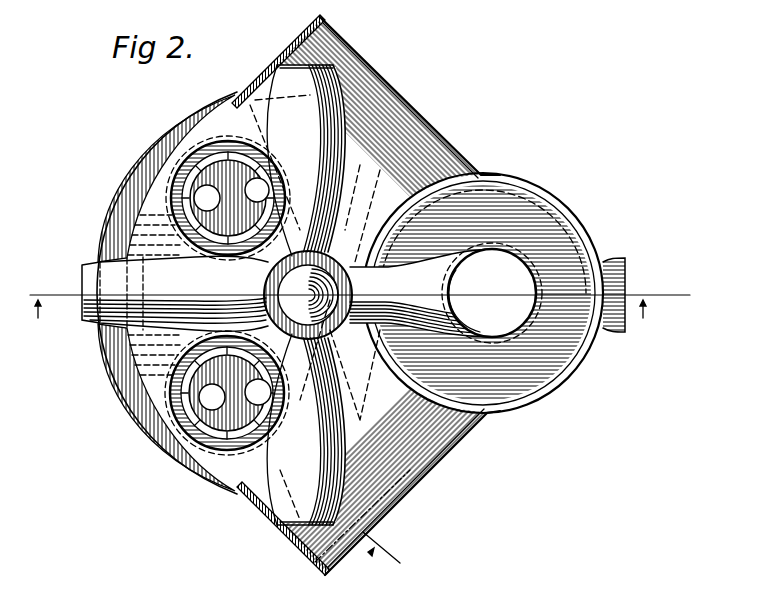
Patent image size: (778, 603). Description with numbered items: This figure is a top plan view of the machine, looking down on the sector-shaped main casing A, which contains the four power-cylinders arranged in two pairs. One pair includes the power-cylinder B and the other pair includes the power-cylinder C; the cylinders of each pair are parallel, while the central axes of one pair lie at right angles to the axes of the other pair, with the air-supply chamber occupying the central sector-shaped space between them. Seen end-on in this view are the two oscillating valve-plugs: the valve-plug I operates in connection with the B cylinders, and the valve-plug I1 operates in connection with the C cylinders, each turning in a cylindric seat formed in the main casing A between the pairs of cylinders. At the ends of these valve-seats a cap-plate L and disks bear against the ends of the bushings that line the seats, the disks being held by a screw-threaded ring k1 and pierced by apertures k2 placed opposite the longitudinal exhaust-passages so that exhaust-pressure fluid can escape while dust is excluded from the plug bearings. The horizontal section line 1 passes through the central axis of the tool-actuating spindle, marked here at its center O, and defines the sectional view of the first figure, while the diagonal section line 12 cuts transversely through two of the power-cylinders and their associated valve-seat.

The main casing A is at (193, 455).
The power-cylinder B is at (400, 123).
The power-cylinder C is at (398, 472).
The oscillating valve-plug I is at (210, 190).
The oscillating valve-plug I1 is at (190, 427).
The aperture k2 is at (190, 388).
The screw-threaded ring k1 is at (230, 393).
The cap-plate L is at (229, 198).
The hub / shaft axis O is at (322, 293).
The section line 1 is at (351, 299).
The section line 12 is at (389, 558).